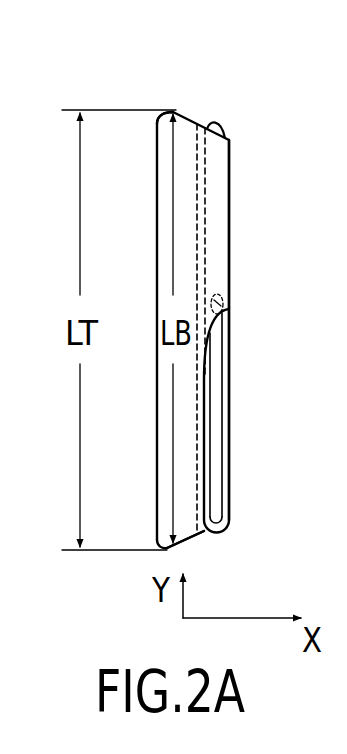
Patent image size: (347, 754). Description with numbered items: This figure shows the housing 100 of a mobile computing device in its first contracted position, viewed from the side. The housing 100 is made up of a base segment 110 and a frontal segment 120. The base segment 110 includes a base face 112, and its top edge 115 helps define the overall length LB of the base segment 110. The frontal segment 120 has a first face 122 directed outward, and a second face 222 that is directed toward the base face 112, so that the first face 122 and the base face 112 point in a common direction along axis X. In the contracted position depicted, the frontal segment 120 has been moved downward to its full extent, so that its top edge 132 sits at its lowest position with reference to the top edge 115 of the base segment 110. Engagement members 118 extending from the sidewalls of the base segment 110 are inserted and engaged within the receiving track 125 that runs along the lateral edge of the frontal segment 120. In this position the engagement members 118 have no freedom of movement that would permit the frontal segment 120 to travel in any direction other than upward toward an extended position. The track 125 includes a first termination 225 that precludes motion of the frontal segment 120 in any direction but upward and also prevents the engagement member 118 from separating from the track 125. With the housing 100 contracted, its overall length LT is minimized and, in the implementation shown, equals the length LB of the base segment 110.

The housing 100 is at (58, 126).
The base segment 110 is at (194, 109).
The base face 112 is at (198, 117).
The top edge 115 is at (183, 107).
The engagement members 118 is at (221, 306).
The frontal segment 120 is at (236, 517).
The first face 122 is at (230, 473).
The receiving track 125 is at (216, 358).
The top edge 132 is at (223, 125).
The second face 222 is at (205, 428).
The first termination 225 is at (217, 294).